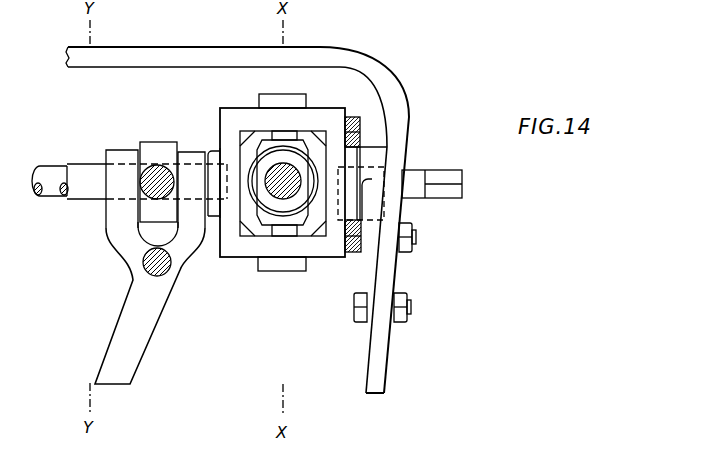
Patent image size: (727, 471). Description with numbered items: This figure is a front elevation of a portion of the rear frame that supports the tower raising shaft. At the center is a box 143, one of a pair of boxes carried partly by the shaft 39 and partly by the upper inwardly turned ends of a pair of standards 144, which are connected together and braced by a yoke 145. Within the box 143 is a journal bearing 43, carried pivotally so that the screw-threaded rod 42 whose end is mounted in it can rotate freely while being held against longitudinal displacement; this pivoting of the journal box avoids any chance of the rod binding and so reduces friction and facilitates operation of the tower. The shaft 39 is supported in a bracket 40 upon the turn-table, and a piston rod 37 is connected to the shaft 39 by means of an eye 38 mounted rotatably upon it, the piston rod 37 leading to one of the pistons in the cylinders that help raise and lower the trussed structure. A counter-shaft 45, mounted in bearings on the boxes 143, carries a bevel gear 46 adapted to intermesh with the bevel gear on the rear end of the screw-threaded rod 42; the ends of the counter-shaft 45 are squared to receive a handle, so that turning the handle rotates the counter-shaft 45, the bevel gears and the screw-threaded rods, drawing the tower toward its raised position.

The piston rod 37 is at (150, 200).
The eye 38 is at (155, 151).
The shaft 39 is at (90, 190).
The bracket 40 is at (128, 330).
The screw-threaded rod 42 is at (266, 177).
The journal bearing 43 is at (300, 226).
The counter-shaft 45 is at (51, 176).
The bevel gear 46 is at (360, 116).
The box 143 is at (240, 248).
The standard 144 is at (380, 380).
The yoke 145 is at (180, 55).